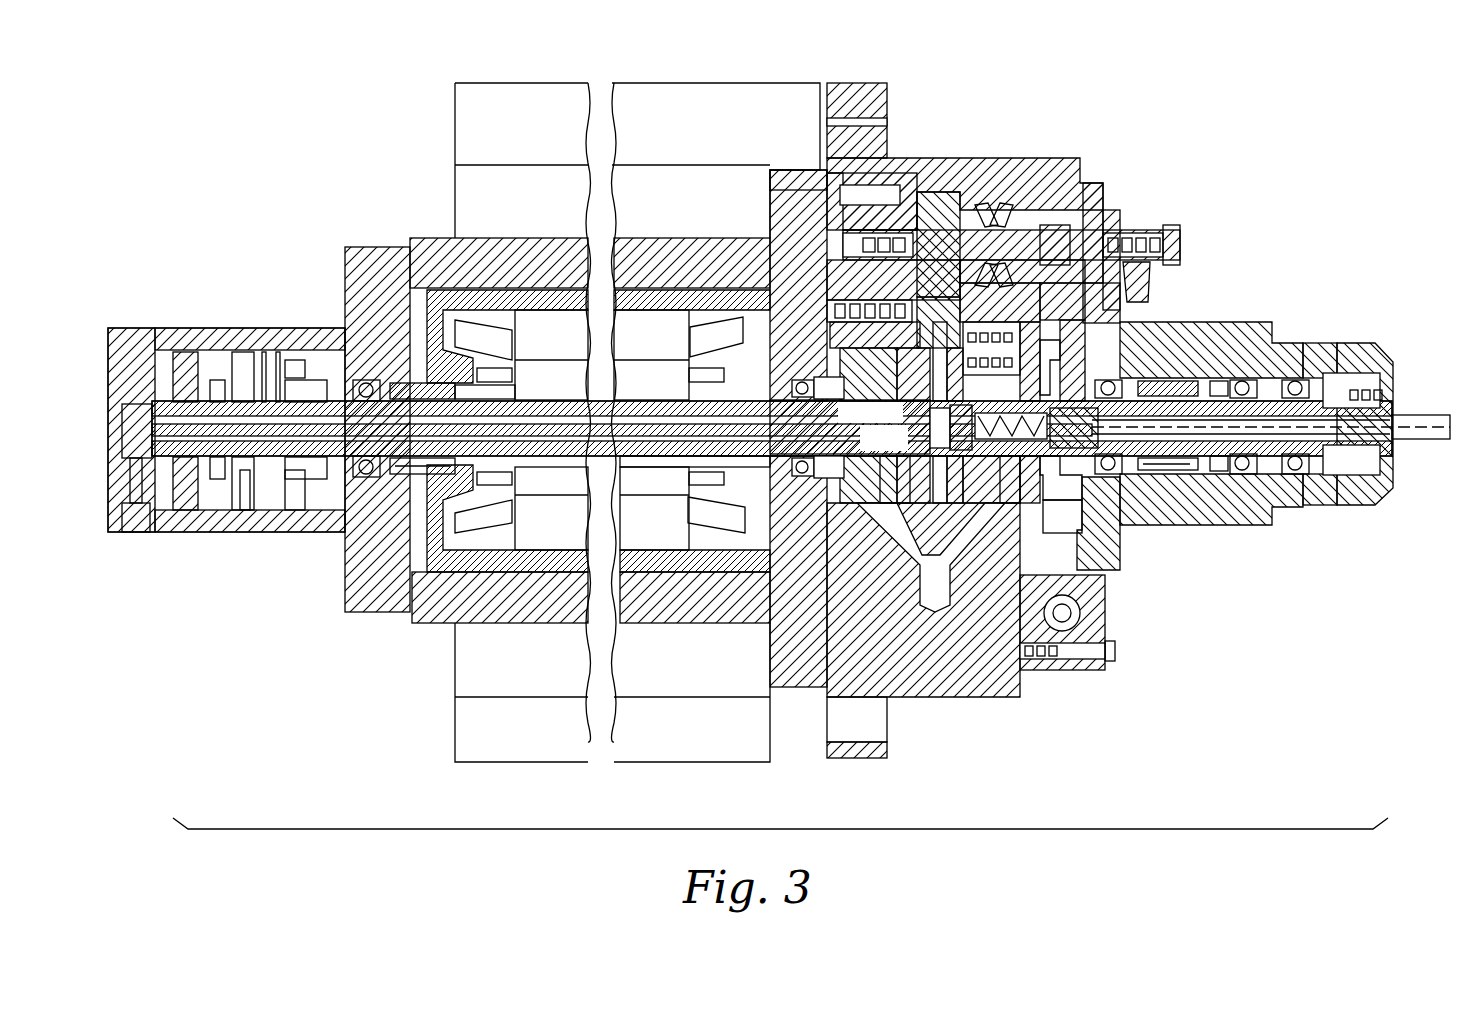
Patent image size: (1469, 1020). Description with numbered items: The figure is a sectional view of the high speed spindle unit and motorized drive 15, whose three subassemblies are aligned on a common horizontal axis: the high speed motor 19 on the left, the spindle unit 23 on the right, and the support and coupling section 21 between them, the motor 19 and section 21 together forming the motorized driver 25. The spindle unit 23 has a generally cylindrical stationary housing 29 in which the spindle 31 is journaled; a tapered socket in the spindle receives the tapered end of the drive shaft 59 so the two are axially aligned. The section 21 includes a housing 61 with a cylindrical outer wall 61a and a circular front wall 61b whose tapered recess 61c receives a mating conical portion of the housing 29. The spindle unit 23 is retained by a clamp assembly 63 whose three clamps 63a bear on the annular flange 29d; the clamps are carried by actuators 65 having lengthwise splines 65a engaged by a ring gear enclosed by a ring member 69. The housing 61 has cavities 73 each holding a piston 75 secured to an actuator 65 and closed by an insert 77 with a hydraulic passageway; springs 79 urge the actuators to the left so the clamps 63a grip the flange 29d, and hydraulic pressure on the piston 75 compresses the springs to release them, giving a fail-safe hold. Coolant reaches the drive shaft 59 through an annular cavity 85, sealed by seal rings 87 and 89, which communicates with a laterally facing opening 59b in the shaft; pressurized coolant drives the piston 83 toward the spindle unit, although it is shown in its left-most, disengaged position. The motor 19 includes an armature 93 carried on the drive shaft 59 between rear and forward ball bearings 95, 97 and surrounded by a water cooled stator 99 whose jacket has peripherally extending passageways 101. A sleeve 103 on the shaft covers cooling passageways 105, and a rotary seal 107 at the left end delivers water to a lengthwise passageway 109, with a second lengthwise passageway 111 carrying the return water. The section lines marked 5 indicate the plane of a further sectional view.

The section line 5- 5 is at (1036, 578).
The high speed spindle unit and motorized drive 15 is at (1165, 607).
The high speed motor 19 is at (634, 222).
The support and coupling section 21 is at (1070, 118).
The spindle unit 23 is at (1275, 238).
The motorized driver 25 is at (615, 422).
The stationary housing 29 is at (1242, 322).
The annular flange 29d is at (1120, 305).
The spindle 31 is at (1252, 500).
The drive shaft 59 is at (790, 382).
The laterally facing opening 59b is at (930, 422).
The housing 61 is at (978, 401).
The cylindrical outer wall 61a is at (932, 700).
The circular front wall 61b is at (1070, 182).
The tapered or conical recess 61c is at (1122, 548).
The clamp assembly 63 is at (1190, 203).
The clamps 63a is at (1152, 290).
The actuators 65 is at (1105, 228).
The teeth or splines 65a is at (1050, 228).
The ring member 69 is at (1105, 192).
The cavities 73 is at (900, 175).
The piston 75 is at (942, 197).
The insert 77 is at (832, 162).
The springs 79 is at (995, 200).
The piston 83 is at (950, 430).
The annular cavity 85 is at (915, 470).
The seal ring 87 is at (905, 500).
The seal ring 89 is at (962, 490).
The armature or rotor 93 is at (645, 377).
The rear ball bearing 95 is at (362, 380).
The forward ball bearing 97 is at (775, 490).
The water cooled stator 99 is at (645, 337).
The peripherally extending passageways 101 is at (515, 560).
The sleeve 103 is at (580, 395).
The passageways 105 is at (700, 457).
The rotary seal 107 is at (212, 360).
The lengthwise extending passageway 109 is at (218, 424).
The second lengthwise extending passageway 111 is at (218, 445).